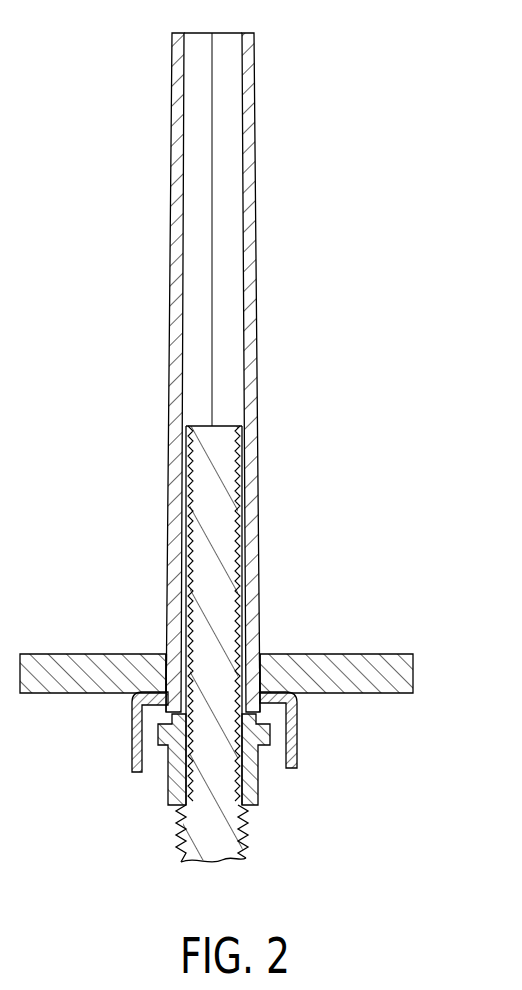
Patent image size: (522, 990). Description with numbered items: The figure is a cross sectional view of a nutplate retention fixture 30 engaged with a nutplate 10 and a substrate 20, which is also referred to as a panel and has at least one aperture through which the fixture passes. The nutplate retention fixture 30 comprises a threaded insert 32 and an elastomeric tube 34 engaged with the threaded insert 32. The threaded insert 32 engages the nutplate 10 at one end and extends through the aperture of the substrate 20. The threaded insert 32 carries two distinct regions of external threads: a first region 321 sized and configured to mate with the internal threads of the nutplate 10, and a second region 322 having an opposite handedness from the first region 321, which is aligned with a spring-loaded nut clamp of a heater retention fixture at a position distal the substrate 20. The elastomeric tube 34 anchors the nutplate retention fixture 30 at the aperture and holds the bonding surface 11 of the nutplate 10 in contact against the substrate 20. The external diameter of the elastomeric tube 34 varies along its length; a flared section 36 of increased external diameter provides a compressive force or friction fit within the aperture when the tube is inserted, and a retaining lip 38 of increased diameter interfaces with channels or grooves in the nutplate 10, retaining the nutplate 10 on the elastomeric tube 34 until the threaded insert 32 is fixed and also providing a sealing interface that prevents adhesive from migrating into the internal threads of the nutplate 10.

The nutplate 10 is at (253, 775).
The bonding surface 11 is at (140, 685).
The substrate 20 is at (216, 645).
The nutplate retention fixture 30 is at (241, 440).
The threaded insert 32 is at (209, 644).
The elastomeric tube 34 is at (254, 372).
The flared section 36 is at (258, 664).
The retaining lip 38 is at (140, 712).
The first region of external threads 321 is at (180, 838).
The second region of external threads 322 is at (189, 560).